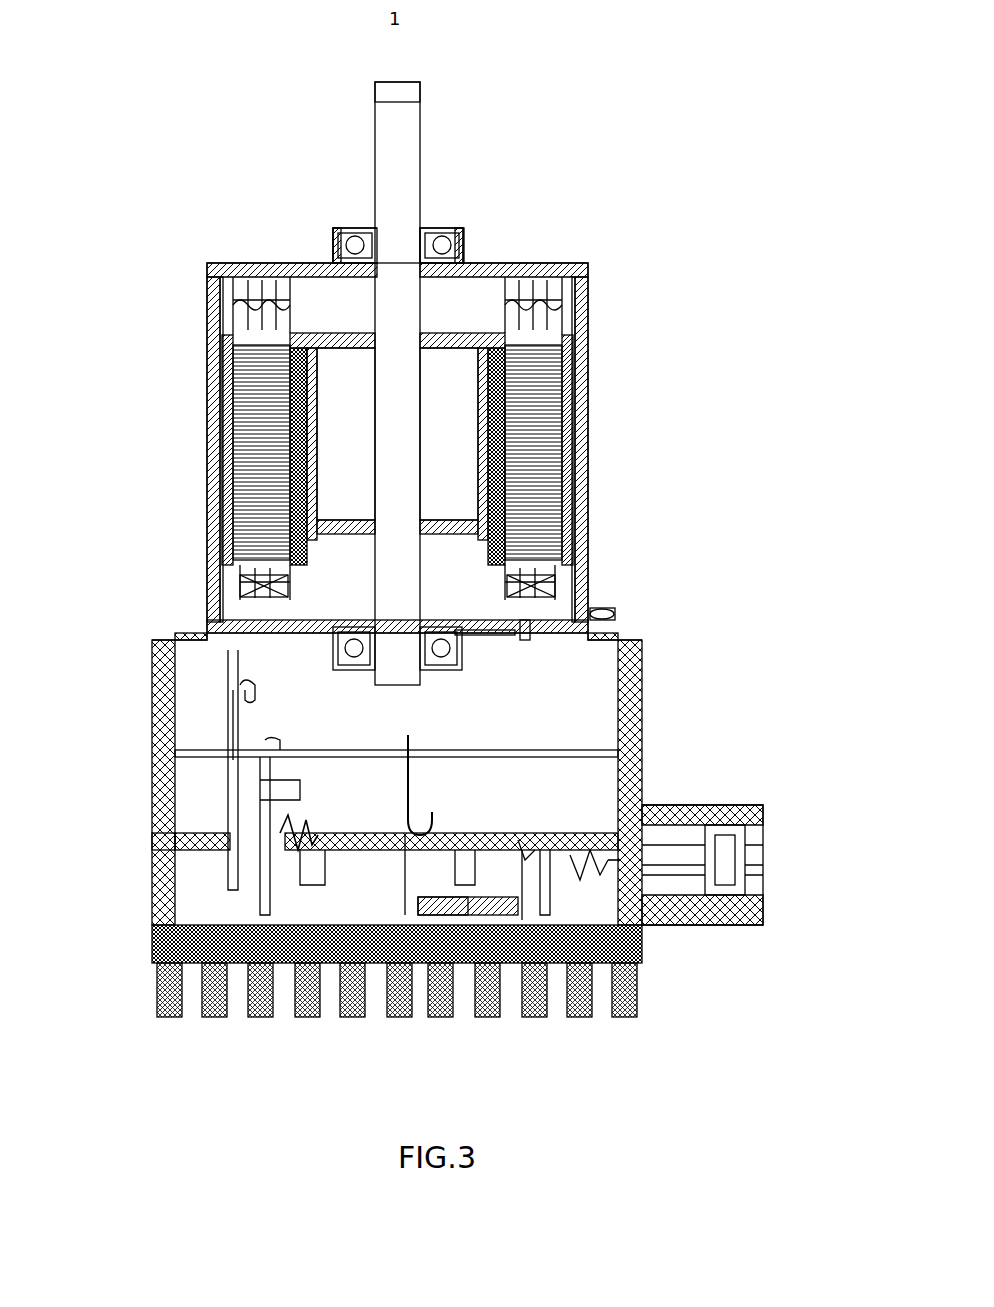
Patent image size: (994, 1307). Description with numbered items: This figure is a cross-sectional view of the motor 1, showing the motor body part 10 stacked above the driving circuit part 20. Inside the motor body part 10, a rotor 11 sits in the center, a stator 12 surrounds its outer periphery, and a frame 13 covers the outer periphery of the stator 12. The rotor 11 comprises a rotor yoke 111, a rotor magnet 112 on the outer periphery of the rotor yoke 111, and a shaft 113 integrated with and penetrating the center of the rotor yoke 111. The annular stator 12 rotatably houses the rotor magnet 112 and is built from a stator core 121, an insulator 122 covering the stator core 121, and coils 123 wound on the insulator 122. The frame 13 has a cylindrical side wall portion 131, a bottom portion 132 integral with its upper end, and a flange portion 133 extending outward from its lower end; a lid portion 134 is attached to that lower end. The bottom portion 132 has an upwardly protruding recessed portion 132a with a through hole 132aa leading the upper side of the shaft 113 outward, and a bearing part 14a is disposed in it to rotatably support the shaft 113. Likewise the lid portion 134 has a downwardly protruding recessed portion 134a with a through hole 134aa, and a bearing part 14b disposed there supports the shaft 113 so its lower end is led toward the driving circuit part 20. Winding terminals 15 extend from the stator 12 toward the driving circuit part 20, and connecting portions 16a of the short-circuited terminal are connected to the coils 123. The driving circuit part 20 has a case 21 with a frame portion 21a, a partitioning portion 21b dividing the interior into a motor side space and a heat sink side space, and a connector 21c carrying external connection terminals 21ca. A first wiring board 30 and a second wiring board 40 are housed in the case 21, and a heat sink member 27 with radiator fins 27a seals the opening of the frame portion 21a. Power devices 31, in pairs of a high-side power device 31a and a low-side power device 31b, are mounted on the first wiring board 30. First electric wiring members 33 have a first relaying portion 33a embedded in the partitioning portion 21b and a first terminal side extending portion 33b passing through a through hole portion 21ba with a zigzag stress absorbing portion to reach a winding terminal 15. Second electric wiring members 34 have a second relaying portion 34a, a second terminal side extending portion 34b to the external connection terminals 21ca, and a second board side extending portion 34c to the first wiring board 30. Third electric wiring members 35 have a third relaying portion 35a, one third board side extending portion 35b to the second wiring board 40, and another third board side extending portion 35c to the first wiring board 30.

The motor 1 is at (397, 92).
The motor body part 10 is at (596, 380).
The rotor 11 is at (412, 335).
The rotor yoke 111 is at (445, 392).
The rotor magnet 112 is at (482, 340).
The shaft 113 is at (405, 115).
The stator 12 is at (462, 423).
The stator core 121 is at (572, 336).
The insulator 122 is at (585, 298).
The coils 123 is at (585, 292).
The frame 13 is at (390, 392).
The side wall portion 131 is at (207, 300).
The bottom portion 132 is at (365, 210).
The recessed portion 132a is at (333, 235).
The through hole 132aa is at (352, 228).
The flange portion 133 is at (203, 615).
The lid portion 134 is at (416, 493).
The recessed portion 134a is at (540, 628).
The through hole 134aa is at (465, 633).
The bearing part 14a is at (333, 248).
The bearing part 14b is at (540, 640).
The winding terminals 15 is at (300, 800).
The connecting portions 16a is at (615, 628).
The driving circuit part 20 is at (439, 766).
The case 21 is at (439, 779).
The frame portion 21a is at (165, 692).
The partitioning portion 21b is at (625, 820).
The through hole portions 21ba is at (175, 840).
The connector 21c is at (725, 805).
The external connection terminals 21ca is at (730, 835).
The heat sink member 27 is at (426, 989).
The radiator fins 27a is at (590, 1000).
The first wiring board 30 is at (300, 855).
The power devices 31 is at (465, 999).
The high-side power device 31a is at (500, 915).
The low-side power device 31b is at (445, 915).
The first electric wiring members 33 is at (199, 871).
The first relaying portion 33a is at (235, 895).
The first terminal side extending portion 33b is at (265, 920).
The second electric wiring members 34 is at (653, 976).
The second relaying portion 34a is at (545, 918).
The second terminal side extending portion 34b is at (600, 862).
The second board side extending portion 34c is at (525, 925).
The third electric wiring members 35 is at (498, 914).
The third relaying portion 35a is at (405, 915).
The third board side extending portion 35b is at (310, 890).
The other third board side extending portion 35c is at (462, 890).
The second wiring board 40 is at (618, 753).